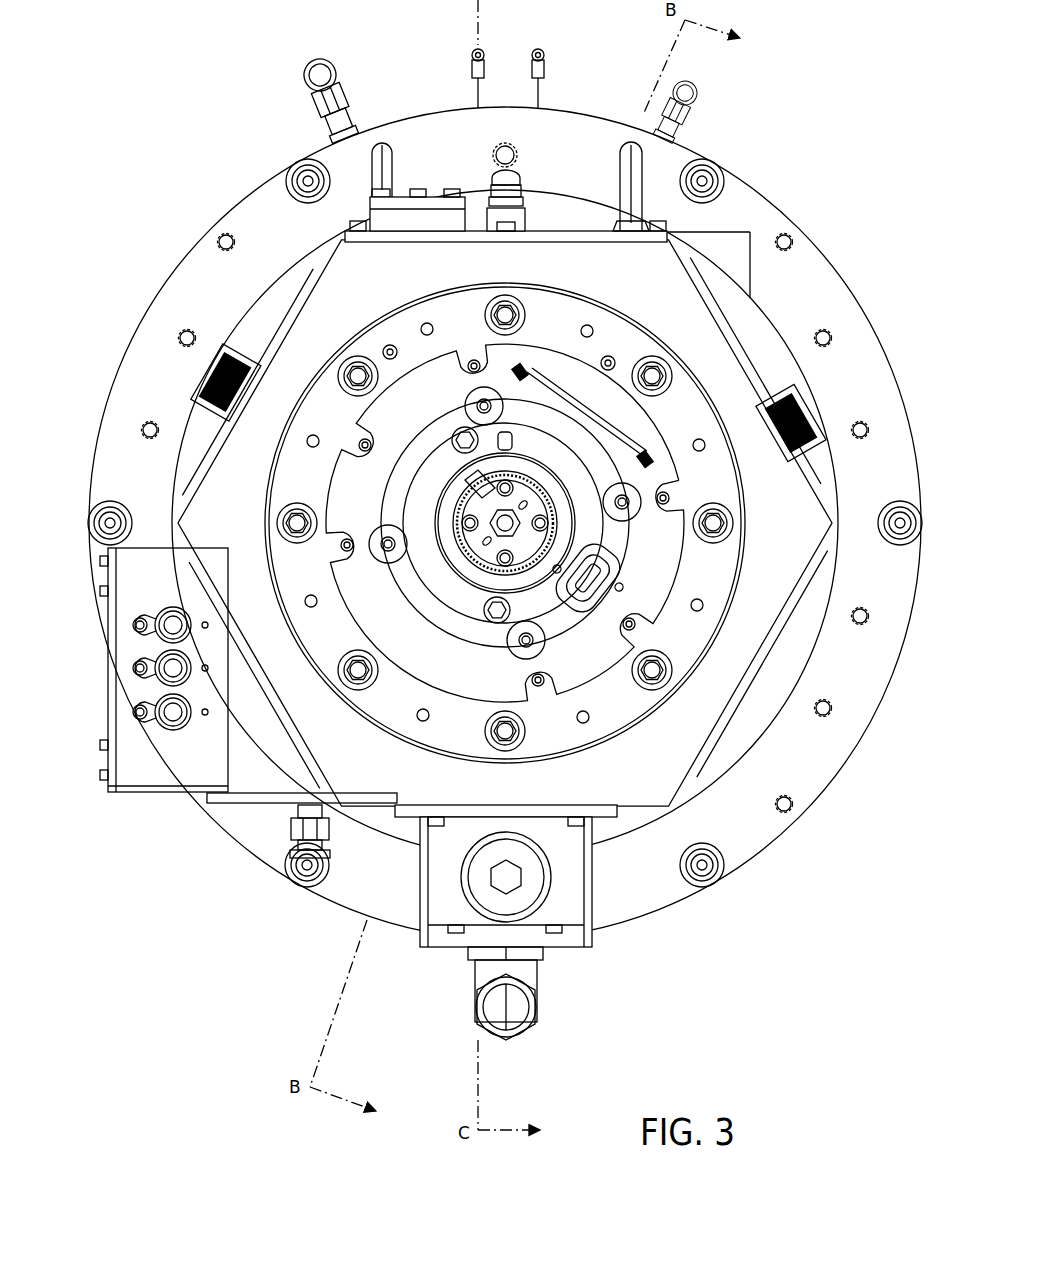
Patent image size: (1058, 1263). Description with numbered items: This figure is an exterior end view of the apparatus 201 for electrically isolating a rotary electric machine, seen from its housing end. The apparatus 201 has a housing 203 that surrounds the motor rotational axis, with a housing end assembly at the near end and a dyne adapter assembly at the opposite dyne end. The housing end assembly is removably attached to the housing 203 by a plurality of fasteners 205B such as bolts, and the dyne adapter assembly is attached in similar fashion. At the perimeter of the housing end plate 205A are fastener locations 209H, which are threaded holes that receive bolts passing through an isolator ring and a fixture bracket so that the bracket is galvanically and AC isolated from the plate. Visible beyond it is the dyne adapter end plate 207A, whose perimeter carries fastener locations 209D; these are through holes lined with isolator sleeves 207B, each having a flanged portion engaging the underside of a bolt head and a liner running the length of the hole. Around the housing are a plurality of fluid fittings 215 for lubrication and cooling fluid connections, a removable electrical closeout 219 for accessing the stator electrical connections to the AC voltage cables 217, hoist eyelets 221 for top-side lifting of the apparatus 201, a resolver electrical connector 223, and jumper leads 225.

The apparatus 201 is at (212, 64).
The housing 203 is at (795, 495).
The housing end plate 205A is at (448, 315).
The fasteners 205B is at (505, 312).
The dyne adapter end plate 207A is at (815, 283).
The isolator sleeves 207B is at (305, 160).
The fastener locations 209D is at (303, 180).
The fastener locations 209H is at (423, 328).
The fluid fittings 215 is at (327, 52).
The AC voltage cables 217 is at (172, 750).
The removable electrical closeout 219 is at (106, 700).
The hoist eyelets 221 is at (392, 170).
The resolver electrical connector 223 is at (600, 586).
The jumper leads 225 is at (478, 64).